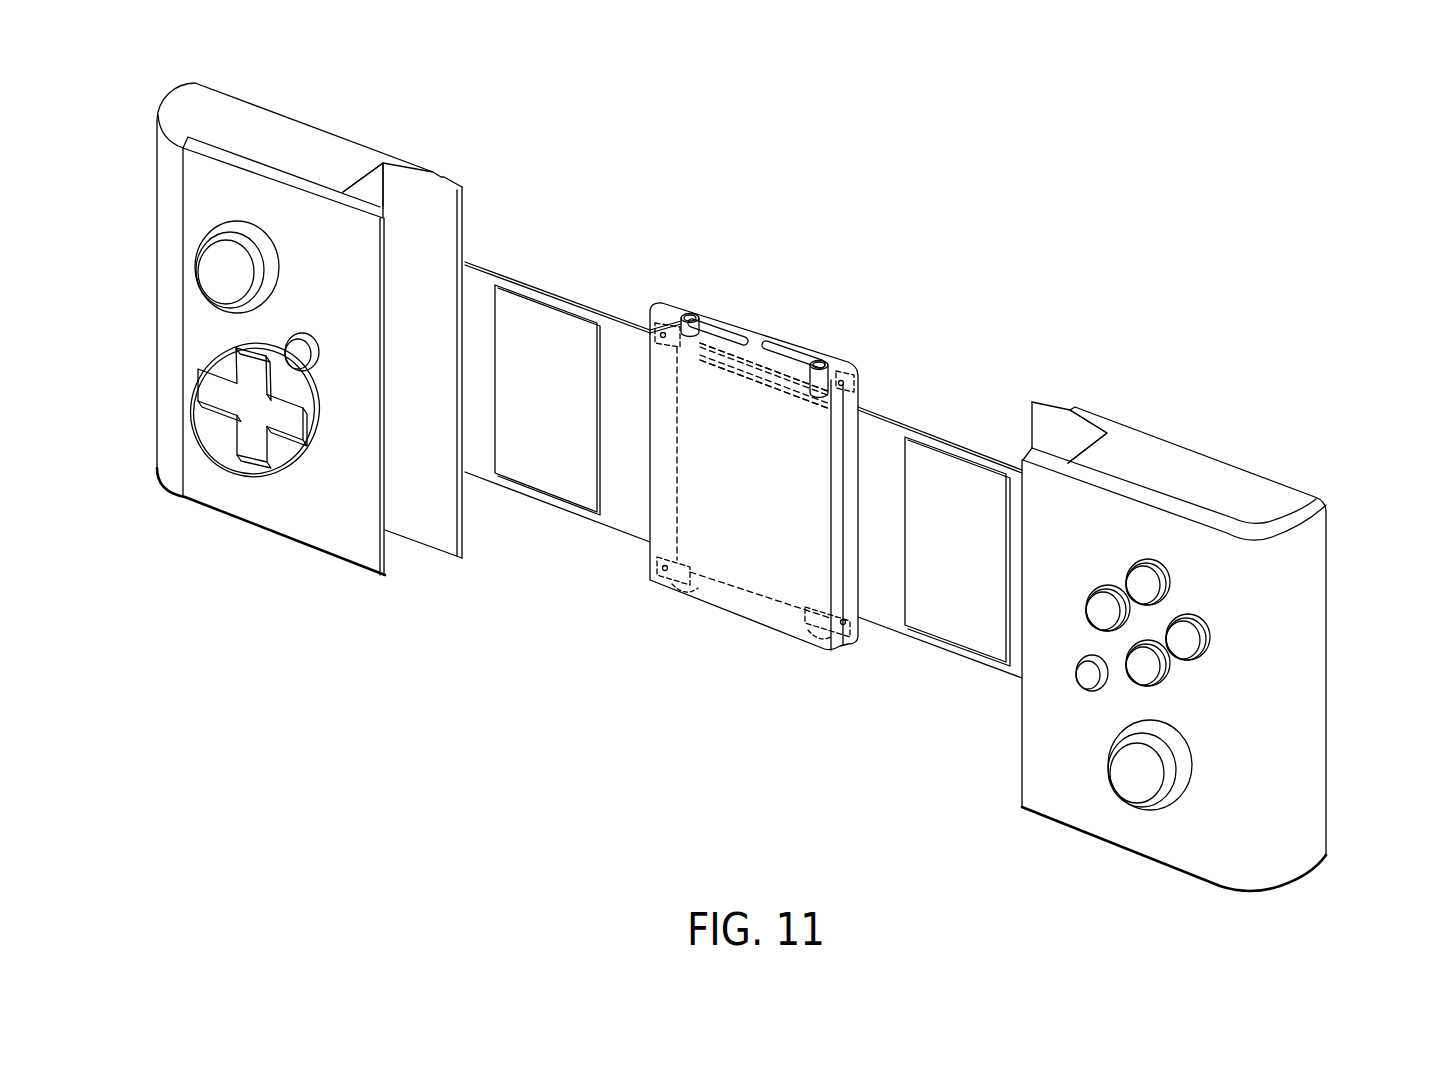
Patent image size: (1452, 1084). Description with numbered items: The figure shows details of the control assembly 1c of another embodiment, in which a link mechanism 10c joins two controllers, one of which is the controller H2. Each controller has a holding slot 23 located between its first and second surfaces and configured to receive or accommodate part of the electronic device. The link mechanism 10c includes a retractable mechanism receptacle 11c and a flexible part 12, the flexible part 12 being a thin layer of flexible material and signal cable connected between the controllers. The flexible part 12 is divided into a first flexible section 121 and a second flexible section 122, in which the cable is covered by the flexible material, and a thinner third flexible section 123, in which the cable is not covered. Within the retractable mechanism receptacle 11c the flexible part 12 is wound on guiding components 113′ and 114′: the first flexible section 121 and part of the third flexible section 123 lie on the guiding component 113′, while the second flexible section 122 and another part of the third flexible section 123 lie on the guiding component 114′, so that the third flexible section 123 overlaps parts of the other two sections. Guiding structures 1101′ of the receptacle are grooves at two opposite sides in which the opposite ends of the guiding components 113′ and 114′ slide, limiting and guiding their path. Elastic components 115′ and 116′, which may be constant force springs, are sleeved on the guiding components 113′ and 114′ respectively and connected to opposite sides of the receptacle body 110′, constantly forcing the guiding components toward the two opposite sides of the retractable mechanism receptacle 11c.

The control assembly 1c is at (419, 79).
The holding slot 23 is at (390, 245).
The first flexible section 121 is at (555, 303).
The second flexible section 122 is at (941, 447).
The flexible part 12 is at (743, 451).
The link mechanism 10c is at (743, 470).
The retractable mechanism receptacle 11c is at (754, 470).
The block body 110′ is at (757, 628).
The guiding structures 1101′ is at (724, 325).
The guiding component 114′ is at (689, 314).
The guiding component 113′ is at (828, 362).
The elastic component 116′ is at (672, 352).
The elastic component 115′ is at (848, 363).
The third flexible section 123 is at (748, 364).
The controller H2 is at (1293, 693).